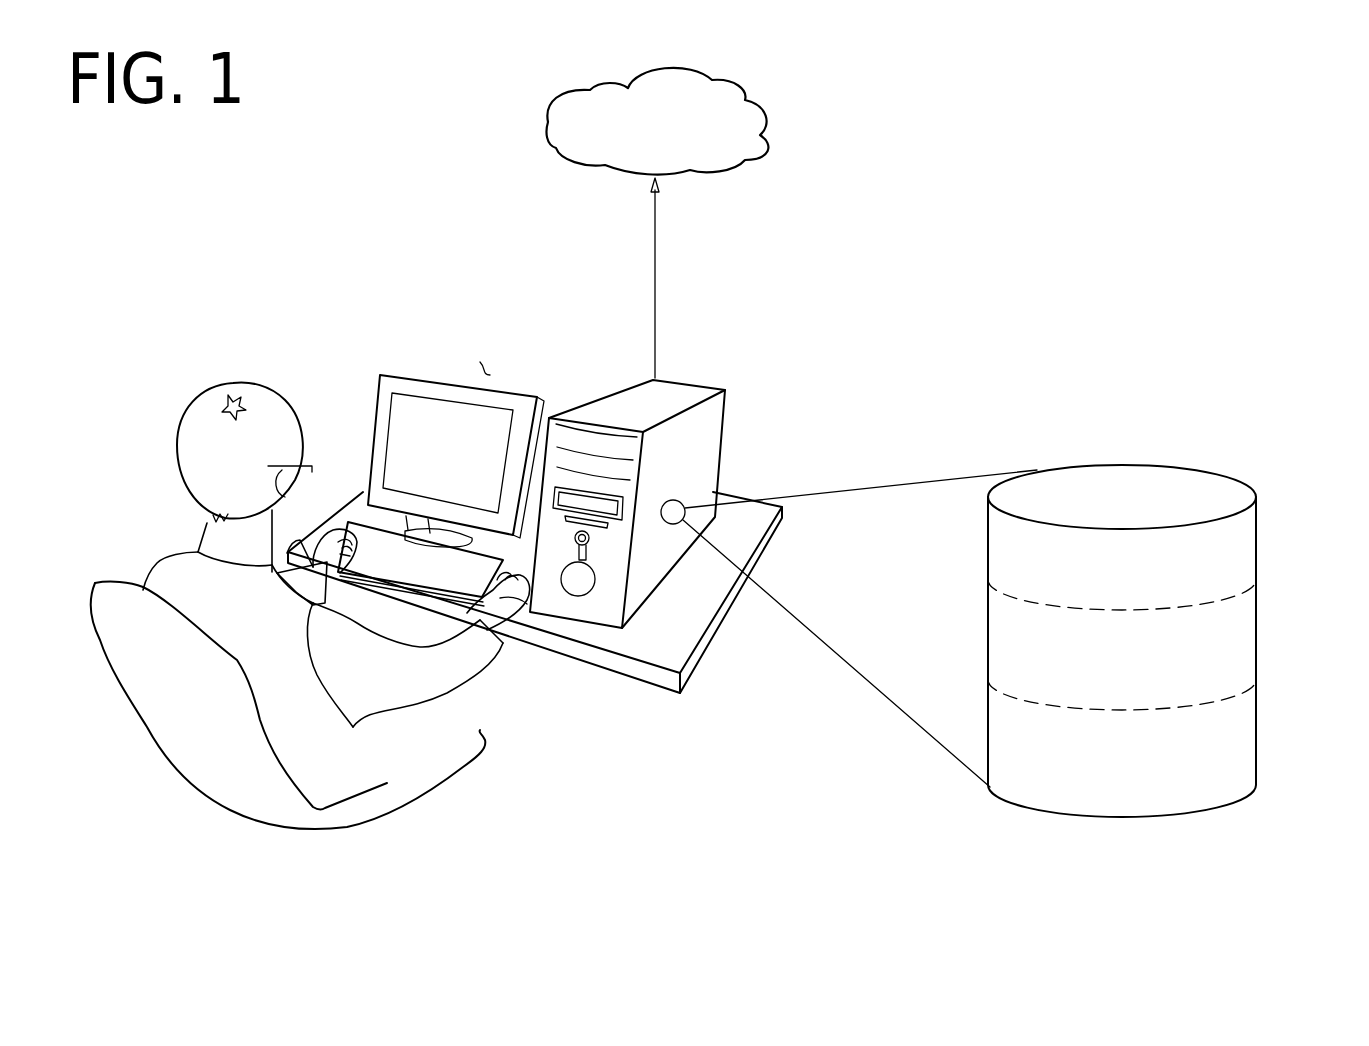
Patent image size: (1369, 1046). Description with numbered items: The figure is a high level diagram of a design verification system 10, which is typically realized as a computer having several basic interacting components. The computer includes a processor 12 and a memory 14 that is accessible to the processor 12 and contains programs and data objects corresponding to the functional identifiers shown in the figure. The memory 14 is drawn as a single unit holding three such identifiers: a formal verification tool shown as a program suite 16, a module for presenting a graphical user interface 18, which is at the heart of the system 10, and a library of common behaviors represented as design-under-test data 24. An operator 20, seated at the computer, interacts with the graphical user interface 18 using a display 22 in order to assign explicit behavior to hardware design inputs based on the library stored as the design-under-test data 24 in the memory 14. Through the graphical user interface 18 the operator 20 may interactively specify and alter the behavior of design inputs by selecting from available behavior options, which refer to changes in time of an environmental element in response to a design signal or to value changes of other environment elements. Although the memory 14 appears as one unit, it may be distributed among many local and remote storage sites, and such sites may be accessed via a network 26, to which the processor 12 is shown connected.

The design verification system 10 is at (1188, 205).
The processor 12 is at (605, 408).
The memory 14 is at (1132, 618).
The program suite 16 is at (995, 622).
The graphical user interface 18 is at (1252, 763).
The operator 20 is at (182, 427).
The display 22 is at (492, 388).
The design-under-test data 24 is at (1255, 560).
The network 26 is at (768, 135).